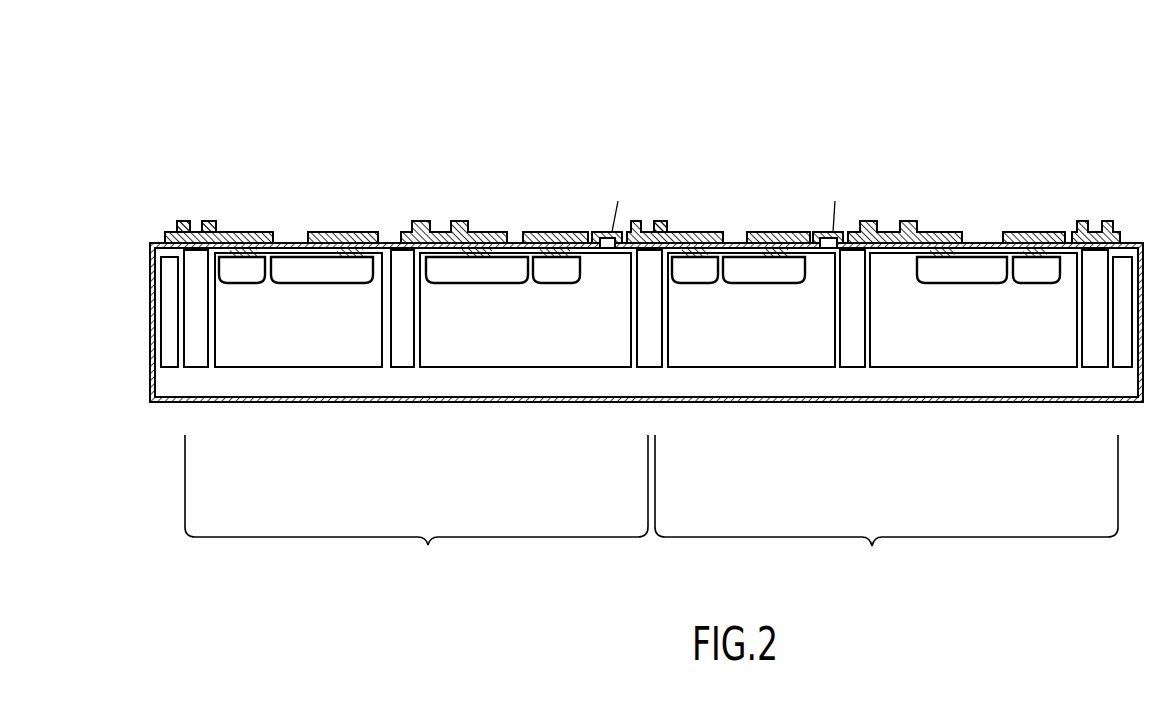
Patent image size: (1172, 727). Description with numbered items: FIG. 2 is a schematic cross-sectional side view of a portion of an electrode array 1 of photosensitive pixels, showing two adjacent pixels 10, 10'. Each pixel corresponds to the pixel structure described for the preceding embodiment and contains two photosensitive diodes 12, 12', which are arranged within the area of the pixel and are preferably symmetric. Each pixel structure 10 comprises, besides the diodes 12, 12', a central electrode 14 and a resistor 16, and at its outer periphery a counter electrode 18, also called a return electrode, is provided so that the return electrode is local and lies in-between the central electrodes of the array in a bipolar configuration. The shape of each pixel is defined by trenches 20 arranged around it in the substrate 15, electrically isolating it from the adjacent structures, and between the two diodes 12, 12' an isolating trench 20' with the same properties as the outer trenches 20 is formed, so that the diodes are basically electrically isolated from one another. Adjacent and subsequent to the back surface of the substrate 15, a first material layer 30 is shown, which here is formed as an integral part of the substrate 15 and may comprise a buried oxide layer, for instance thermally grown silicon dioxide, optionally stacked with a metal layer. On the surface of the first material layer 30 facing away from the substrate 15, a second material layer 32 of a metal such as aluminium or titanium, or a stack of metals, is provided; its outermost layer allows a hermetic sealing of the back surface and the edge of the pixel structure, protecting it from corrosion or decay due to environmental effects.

The electrode array 1 is at (1083, 102).
The photosensitive pixel structure 10 is at (877, 348).
The further pixel 10' is at (416, 419).
The photosensitive diode 12 is at (525, 370).
The photosensitive diode 12' is at (298, 371).
The central electrode 14 is at (442, 230).
The substrate 15 is at (1008, 333).
The resistor 16 is at (600, 232).
The counter electrode 18 is at (197, 227).
The trench 20 is at (652, 235).
The isolating trench 20' is at (916, 235).
The first material layer 30 is at (968, 380).
The second material layer 32 is at (890, 398).